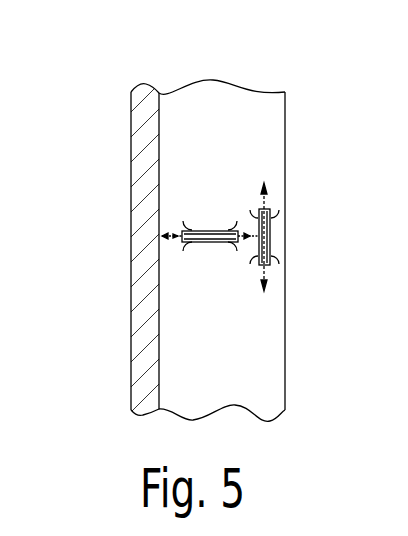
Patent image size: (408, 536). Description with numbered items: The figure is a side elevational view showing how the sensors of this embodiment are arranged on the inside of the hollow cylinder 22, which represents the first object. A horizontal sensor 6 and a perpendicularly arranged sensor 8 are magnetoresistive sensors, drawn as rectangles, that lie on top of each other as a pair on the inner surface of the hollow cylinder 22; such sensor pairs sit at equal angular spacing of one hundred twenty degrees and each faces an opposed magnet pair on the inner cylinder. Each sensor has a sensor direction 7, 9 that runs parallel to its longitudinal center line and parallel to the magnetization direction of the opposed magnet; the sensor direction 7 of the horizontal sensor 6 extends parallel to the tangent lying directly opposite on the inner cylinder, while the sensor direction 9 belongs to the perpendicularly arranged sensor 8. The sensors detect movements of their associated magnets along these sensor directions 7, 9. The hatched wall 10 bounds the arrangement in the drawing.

The wall 10 is at (148, 140).
The hollow cylinder 22 is at (227, 140).
The perpendicularly arranged sensor 8 is at (200, 229).
The sensor direction 9 is at (178, 241).
The horizontal sensor 6 is at (270, 231).
The sensor direction 7 is at (272, 268).